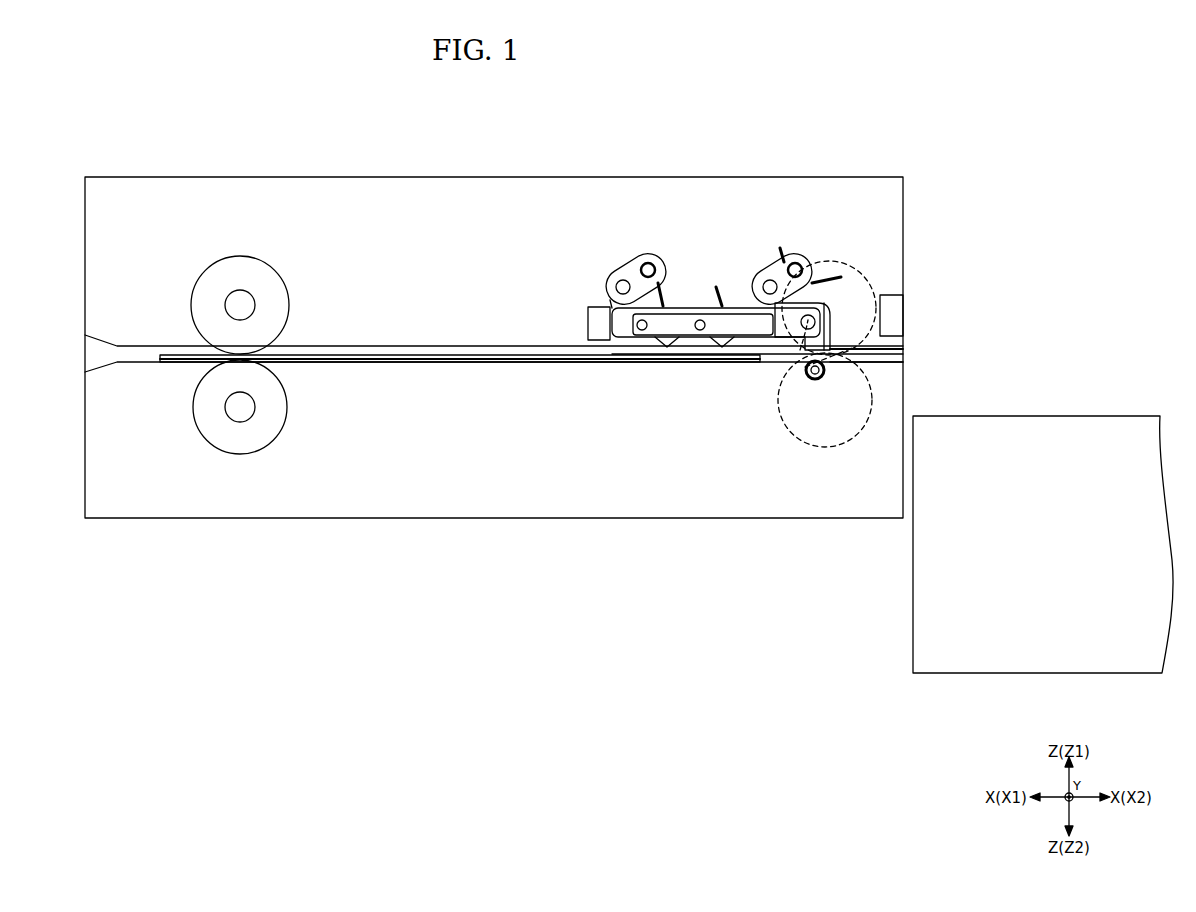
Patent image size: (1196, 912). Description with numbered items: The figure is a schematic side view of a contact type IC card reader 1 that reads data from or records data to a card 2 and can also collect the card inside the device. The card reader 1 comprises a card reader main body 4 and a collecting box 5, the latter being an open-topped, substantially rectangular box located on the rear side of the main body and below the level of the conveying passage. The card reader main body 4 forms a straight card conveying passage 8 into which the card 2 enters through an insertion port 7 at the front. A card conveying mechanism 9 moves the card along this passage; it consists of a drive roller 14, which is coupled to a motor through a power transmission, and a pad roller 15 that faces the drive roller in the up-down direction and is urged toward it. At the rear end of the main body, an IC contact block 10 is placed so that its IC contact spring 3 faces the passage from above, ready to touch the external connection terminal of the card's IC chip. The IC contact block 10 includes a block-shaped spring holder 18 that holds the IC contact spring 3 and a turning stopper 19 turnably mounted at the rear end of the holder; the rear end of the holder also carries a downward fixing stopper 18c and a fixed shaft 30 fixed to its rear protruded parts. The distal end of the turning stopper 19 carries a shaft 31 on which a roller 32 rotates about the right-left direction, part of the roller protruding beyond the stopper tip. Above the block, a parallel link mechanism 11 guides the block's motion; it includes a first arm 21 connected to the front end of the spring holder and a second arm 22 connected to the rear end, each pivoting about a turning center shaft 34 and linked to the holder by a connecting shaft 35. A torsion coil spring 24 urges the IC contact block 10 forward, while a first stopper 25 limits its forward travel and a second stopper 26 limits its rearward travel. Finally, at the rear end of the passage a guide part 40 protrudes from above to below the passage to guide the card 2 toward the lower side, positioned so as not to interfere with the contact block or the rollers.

The IC card reader 1 is at (930, 128).
The card 2 is at (400, 355).
The IC contact spring 3 is at (658, 346).
The card reader main body 4 is at (403, 177).
The collecting box 5 is at (1046, 416).
The insertion port 7 is at (85, 356).
The card conveying passage 8 is at (462, 354).
The card conveying mechanism 9 is at (522, 350).
The IC contact block 10 is at (695, 308).
The parallel link mechanism 11 is at (582, 235).
The drive roller 14 is at (240, 256).
The pad roller 15 is at (240, 454).
The spring holder 18 is at (635, 337).
The fixing stopper 18c is at (805, 352).
The turning stopper 19 is at (880, 347).
The arm 21 is at (631, 262).
The arm 22 is at (776, 262).
The torsion coil spring 24 is at (830, 275).
The stopper 25 is at (588, 322).
The stopper 26 is at (893, 295).
The fixed shaft 30 is at (814, 322).
The shaft 31 is at (828, 378).
The roller 32 is at (815, 380).
The turning center shaft 34 is at (648, 262).
The connecting shaft 35 is at (615, 289).
The guide part 40 is at (880, 362).